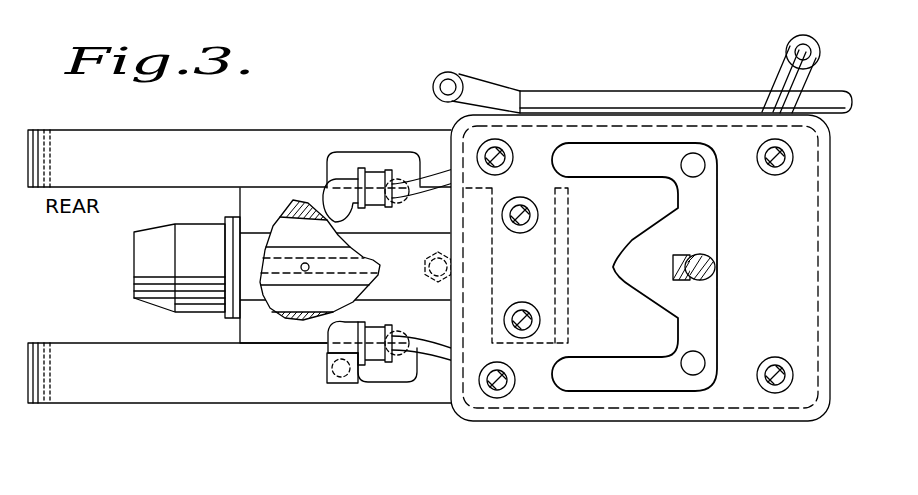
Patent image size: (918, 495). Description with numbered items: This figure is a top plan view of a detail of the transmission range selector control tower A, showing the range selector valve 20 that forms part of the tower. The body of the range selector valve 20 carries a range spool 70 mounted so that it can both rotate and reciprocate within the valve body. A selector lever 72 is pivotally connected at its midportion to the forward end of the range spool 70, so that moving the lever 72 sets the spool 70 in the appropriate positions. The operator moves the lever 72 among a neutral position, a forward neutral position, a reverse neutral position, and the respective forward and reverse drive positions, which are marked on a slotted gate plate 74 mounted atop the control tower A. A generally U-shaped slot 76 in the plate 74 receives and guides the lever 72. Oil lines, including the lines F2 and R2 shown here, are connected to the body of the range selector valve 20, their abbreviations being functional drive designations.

The range selector valve 20 is at (251, 193).
The range spool 70 is at (313, 253).
The selector lever 72 is at (685, 256).
The slotted gate plate 74 is at (478, 416).
The slot 76 is at (598, 142).
The transmission range selector control tower A is at (679, 91).
The oil line R2 is at (431, 172).
The oil line F2 is at (440, 355).